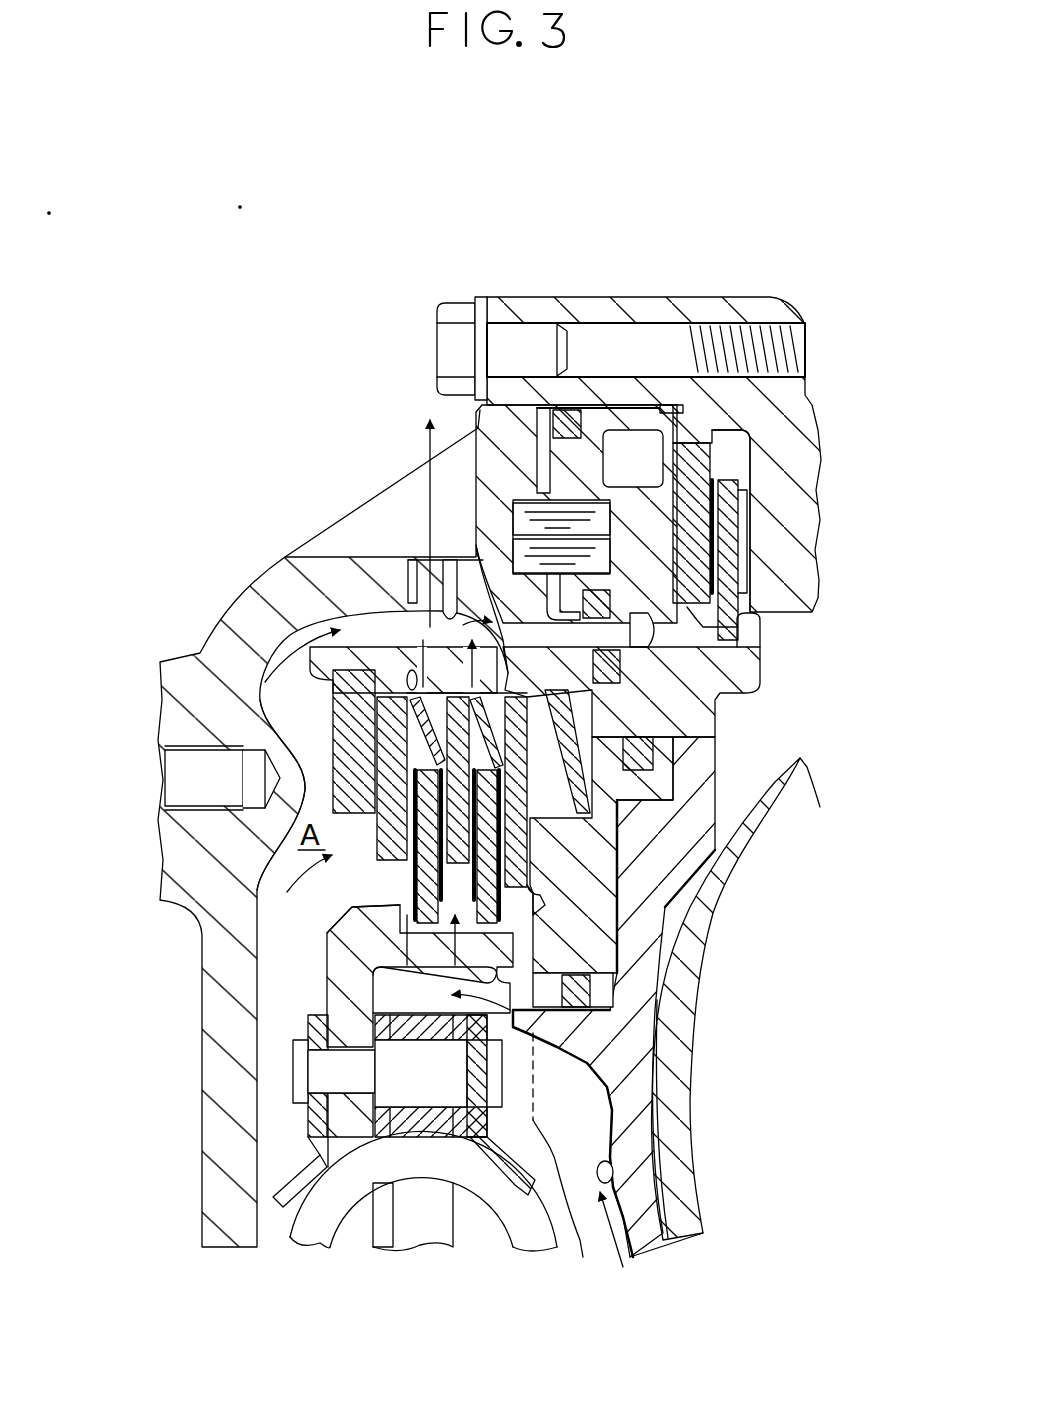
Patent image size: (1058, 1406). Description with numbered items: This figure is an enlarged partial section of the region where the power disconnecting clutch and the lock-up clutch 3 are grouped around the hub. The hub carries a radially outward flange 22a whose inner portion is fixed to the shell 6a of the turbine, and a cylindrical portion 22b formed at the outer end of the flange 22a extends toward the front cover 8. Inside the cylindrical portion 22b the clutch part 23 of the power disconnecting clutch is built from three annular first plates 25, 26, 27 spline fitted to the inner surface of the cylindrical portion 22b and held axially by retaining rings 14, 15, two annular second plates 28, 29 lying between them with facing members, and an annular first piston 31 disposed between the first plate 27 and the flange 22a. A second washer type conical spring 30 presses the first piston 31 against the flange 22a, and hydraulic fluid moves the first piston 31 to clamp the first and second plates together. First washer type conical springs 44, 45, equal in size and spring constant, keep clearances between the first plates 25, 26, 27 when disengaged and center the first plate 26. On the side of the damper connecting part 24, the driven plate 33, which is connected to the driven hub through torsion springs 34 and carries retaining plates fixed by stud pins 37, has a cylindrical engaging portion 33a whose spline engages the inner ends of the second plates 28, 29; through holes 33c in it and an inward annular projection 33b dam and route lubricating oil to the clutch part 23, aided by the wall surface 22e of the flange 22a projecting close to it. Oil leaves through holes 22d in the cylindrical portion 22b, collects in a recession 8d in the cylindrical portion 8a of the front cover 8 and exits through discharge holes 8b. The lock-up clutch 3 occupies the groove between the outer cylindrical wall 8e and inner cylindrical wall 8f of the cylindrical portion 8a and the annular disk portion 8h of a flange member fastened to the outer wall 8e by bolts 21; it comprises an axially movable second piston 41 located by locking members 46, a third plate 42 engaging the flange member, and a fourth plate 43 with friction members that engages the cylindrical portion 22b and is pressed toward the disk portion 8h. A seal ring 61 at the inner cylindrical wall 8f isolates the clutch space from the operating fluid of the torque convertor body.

The lock-up clutch 3 is at (777, 218).
The shell 6a is at (713, 897).
The front cover 8 is at (213, 942).
The cylindrical portion 8a is at (305, 585).
The discharge holes 8b is at (418, 570).
The recession 8d is at (462, 597).
The outer cylindrical wall 8e is at (547, 305).
The inner cylindrical wall 8f is at (640, 635).
The annular disk portion 8h is at (780, 450).
The retaining ring 14 is at (485, 792).
The retaining ring 15 is at (340, 712).
The bolts 21 is at (440, 303).
The flange 22a is at (623, 1063).
The cylindrical portion 22b is at (390, 647).
The holes 22d is at (407, 673).
The wall surface 22e is at (613, 1165).
The clutch part 23 is at (281, 813).
The damper connecting part 24 is at (290, 1125).
The first plate 25 is at (330, 750).
The first plate 26 is at (455, 865).
The first plate 27 is at (503, 888).
The second plate 28 is at (417, 890).
The second plate 29 is at (503, 945).
The second washer type conical spring 30 is at (575, 790).
The first piston 31 is at (598, 860).
The driven plate 33 is at (342, 988).
The engaging portion 33a is at (387, 940).
The annular projection 33b is at (560, 980).
The through holes 33c is at (441, 993).
The torsion springs 34 is at (527, 1220).
The stud pins 37 is at (323, 1070).
The second piston 41 is at (593, 413).
The third plate 42 is at (700, 440).
The fourth plate 43 is at (753, 475).
The first washer type conical spring 44 is at (350, 750).
The first washer type conical spring 45 is at (718, 705).
The locking members 46 is at (545, 493).
The seal ring 61 is at (760, 657).